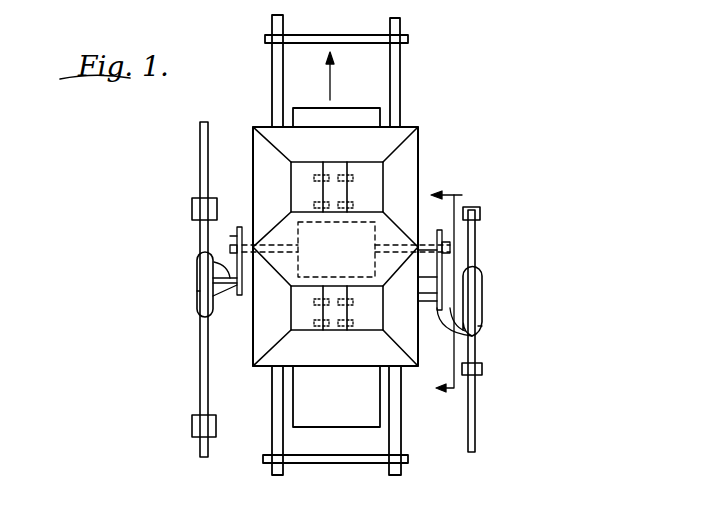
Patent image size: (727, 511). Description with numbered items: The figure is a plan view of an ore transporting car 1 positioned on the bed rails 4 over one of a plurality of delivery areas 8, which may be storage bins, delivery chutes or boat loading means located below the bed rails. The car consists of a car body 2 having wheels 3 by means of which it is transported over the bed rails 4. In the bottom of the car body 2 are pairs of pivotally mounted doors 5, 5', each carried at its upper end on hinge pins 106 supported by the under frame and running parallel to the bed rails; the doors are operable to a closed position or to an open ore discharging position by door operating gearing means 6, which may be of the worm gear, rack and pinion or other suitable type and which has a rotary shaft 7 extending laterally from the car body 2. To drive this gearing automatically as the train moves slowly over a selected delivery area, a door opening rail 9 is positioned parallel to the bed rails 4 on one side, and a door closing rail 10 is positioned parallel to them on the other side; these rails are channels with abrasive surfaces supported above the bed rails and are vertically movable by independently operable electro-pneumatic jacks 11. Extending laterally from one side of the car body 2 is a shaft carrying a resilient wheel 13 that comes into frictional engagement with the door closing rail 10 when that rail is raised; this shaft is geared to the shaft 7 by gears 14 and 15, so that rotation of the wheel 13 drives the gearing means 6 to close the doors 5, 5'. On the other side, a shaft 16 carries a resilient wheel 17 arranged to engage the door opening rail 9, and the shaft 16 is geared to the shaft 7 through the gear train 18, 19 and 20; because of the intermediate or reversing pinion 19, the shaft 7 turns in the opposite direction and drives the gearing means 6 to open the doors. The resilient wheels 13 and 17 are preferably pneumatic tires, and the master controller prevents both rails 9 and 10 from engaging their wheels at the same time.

The ore transporting car 1 is at (419, 151).
The car body 2 is at (254, 353).
The wheels 3 is at (446, 292).
The bed rails 4 is at (272, 24).
The door 5 is at (363, 152).
The door 5' is at (337, 321).
The door operating gearing means 6 is at (378, 220).
The rotary shaft 7 is at (249, 245).
The delivery area 8 is at (367, 413).
The door opening rail 9 is at (475, 252).
The door closing rail 10 is at (200, 355).
The electro-pneumatic jacks 11 is at (192, 208).
The resilient wheel 13 is at (197, 291).
The gear 14 is at (213, 296).
The gear 15 is at (237, 236).
The shaft 16 is at (482, 326).
The resilient wheel 17 is at (472, 316).
The gear 18 is at (478, 333).
The intermediate or reversing pinion 19 is at (213, 268).
The gear 20 is at (443, 237).
The hinge pins 106 is at (330, 212).